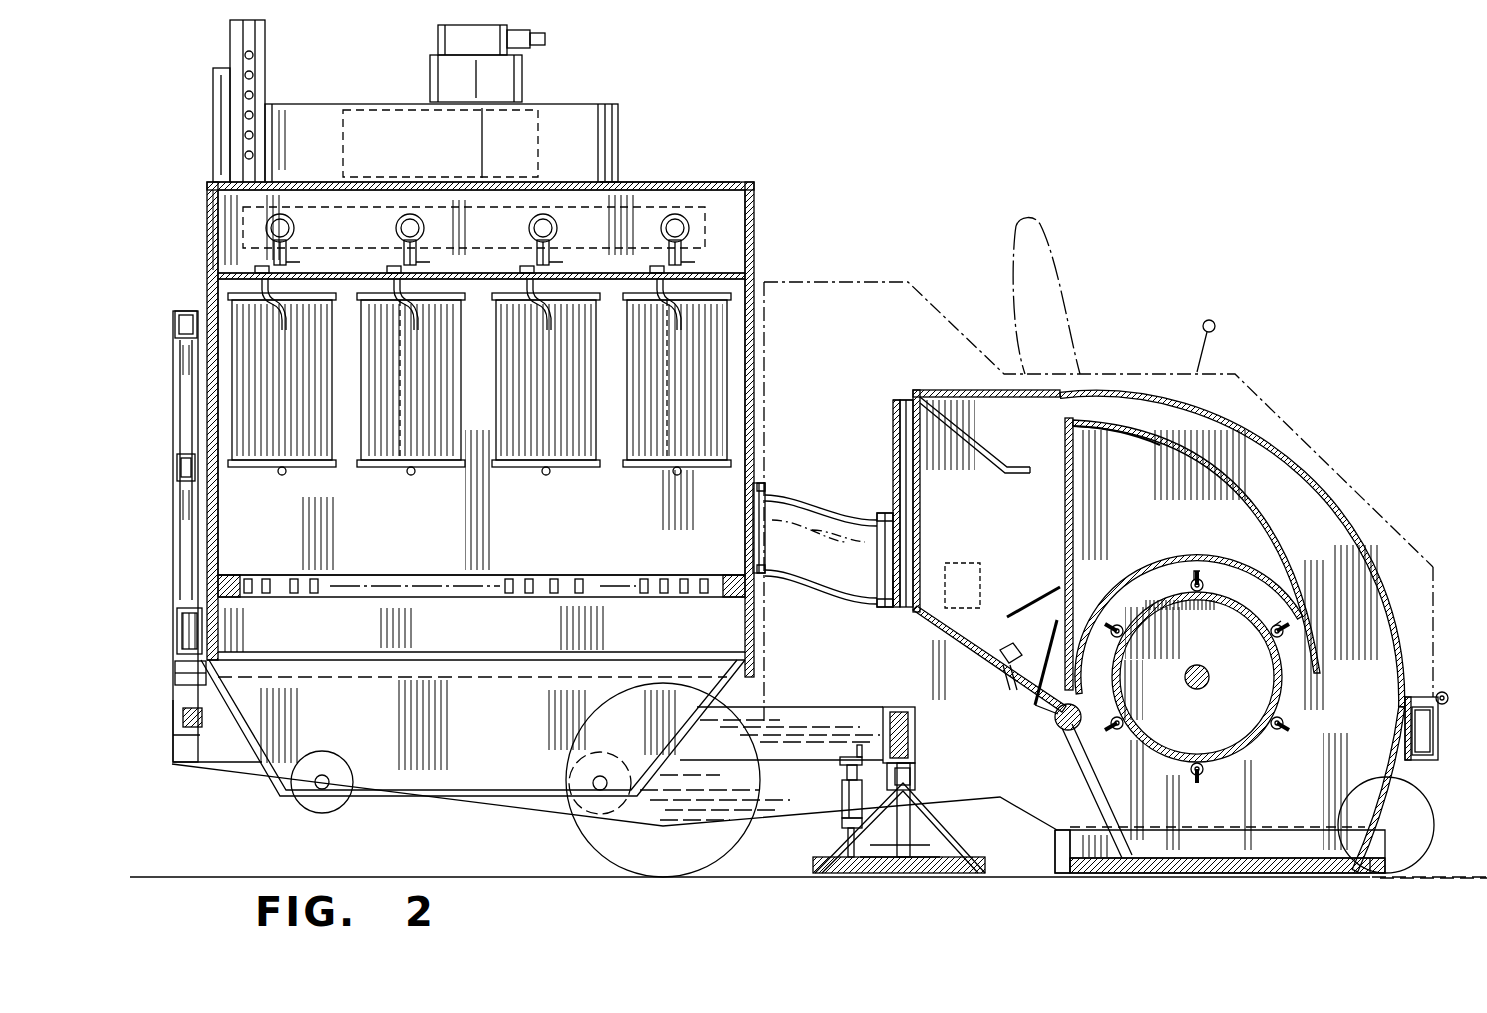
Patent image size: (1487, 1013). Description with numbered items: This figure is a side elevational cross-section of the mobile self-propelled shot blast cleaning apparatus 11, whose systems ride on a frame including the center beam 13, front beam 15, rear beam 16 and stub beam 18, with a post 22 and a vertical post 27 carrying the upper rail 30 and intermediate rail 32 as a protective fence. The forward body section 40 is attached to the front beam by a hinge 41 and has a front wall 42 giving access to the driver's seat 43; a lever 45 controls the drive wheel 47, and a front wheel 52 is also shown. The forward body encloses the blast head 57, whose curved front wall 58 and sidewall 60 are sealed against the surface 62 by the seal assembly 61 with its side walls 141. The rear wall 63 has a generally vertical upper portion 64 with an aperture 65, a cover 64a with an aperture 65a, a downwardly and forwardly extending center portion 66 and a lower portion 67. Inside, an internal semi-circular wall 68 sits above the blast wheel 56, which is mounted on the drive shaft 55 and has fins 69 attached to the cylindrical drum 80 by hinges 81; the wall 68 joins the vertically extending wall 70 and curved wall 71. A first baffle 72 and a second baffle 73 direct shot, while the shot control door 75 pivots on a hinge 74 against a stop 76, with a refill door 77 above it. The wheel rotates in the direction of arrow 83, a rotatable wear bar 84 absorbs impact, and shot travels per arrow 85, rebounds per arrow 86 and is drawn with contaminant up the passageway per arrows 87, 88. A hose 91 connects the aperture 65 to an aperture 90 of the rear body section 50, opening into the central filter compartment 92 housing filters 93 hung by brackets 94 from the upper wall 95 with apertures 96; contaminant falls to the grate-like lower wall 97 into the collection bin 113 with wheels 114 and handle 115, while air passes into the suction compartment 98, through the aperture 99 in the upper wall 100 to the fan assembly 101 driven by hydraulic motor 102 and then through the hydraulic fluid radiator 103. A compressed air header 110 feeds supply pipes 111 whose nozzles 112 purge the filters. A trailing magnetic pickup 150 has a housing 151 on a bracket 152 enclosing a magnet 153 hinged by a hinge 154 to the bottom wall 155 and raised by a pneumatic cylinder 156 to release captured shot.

The shot blast cleaning apparatus 11 is at (1330, 228).
The center beam 13 is at (178, 765).
The front beam 15 is at (1434, 740).
The rear beam 16 is at (176, 632).
The stub beam 18 is at (895, 705).
The post 22 is at (183, 690).
The vertically extending post 27 is at (186, 548).
The horizontally extending rail 30 is at (175, 322).
The intermediate rail 32 is at (177, 463).
The forward body section 40 is at (1302, 426).
The hinge 41 is at (1447, 694).
The front wall 42 is at (1437, 610).
The driver's seat 43 is at (1011, 235).
The lever 45 is at (1212, 318).
The drive wheel 47 is at (590, 862).
The rear body section 50 is at (203, 212).
The front wheel 52 is at (1415, 880).
The drive shaft 55 is at (1184, 684).
The blast wheel 56 is at (1233, 763).
The blast head 57 is at (1386, 555).
The curved front wall 58 is at (1320, 493).
The wall 60 is at (1322, 531).
The seal assembly 61 is at (1288, 874).
The surface 62 is at (1433, 858).
The rear wall 63 is at (896, 480).
The upper portion 64 is at (920, 545).
The cover 64a is at (899, 442).
The aperture 65 is at (899, 402).
The aperture 65a is at (893, 578).
The center portion 66 is at (975, 652).
The lower portion 67 is at (1094, 773).
The internal semi-circular wall 68 is at (1150, 565).
The fins 69 is at (1200, 578).
The vertically extending wall 70 is at (1074, 500).
The curved wall 71 is at (1235, 484).
The first baffle 72 is at (977, 450).
The second baffle 73 is at (1030, 606).
The hinge 74 is at (1031, 690).
The shot control door 75 is at (1018, 665).
The stop 76 is at (990, 668).
The refill door 77 is at (977, 562).
The cylindrical drum 80 is at (1284, 692).
The hinges 81 is at (1204, 587).
The arrow 83 is at (1178, 623).
The wear bar 84 is at (1062, 730).
The arrow 85 is at (1153, 806).
The arrow 86 is at (1318, 776).
The arrow 87 is at (1348, 626).
The arrow 88 is at (1100, 425).
The aperture 90 is at (752, 525).
The hose 91 is at (800, 498).
The central filter compartment 92 is at (483, 533).
The filters 93 is at (362, 468).
The bracket 94 is at (237, 285).
The upper wall 95 is at (456, 275).
The apertures 96 is at (305, 262).
The lower wall 97 is at (260, 577).
The suction compartment 98 is at (325, 197).
The aperture 99 is at (533, 177).
The upper wall 100 is at (651, 184).
The fan assembly 101 is at (540, 105).
The hydraulic motor 102 is at (432, 66).
The hydraulic fluid radiator 103 is at (230, 46).
The header 110 is at (712, 207).
The supply pipes 111 is at (416, 215).
The nozzle 112 is at (419, 296).
The collection bin 113 is at (394, 770).
The wheels 114 is at (310, 806).
The handle 115 is at (200, 730).
The side walls 141 is at (1100, 858).
The trailing magnetic pickup 150 is at (923, 830).
The housing 151 is at (933, 845).
The bracket 152 is at (908, 795).
The magnet 153 is at (870, 874).
The hinge 154 is at (965, 865).
The bottom wall 155 is at (905, 874).
The pneumatic cylinder 156 is at (840, 803).